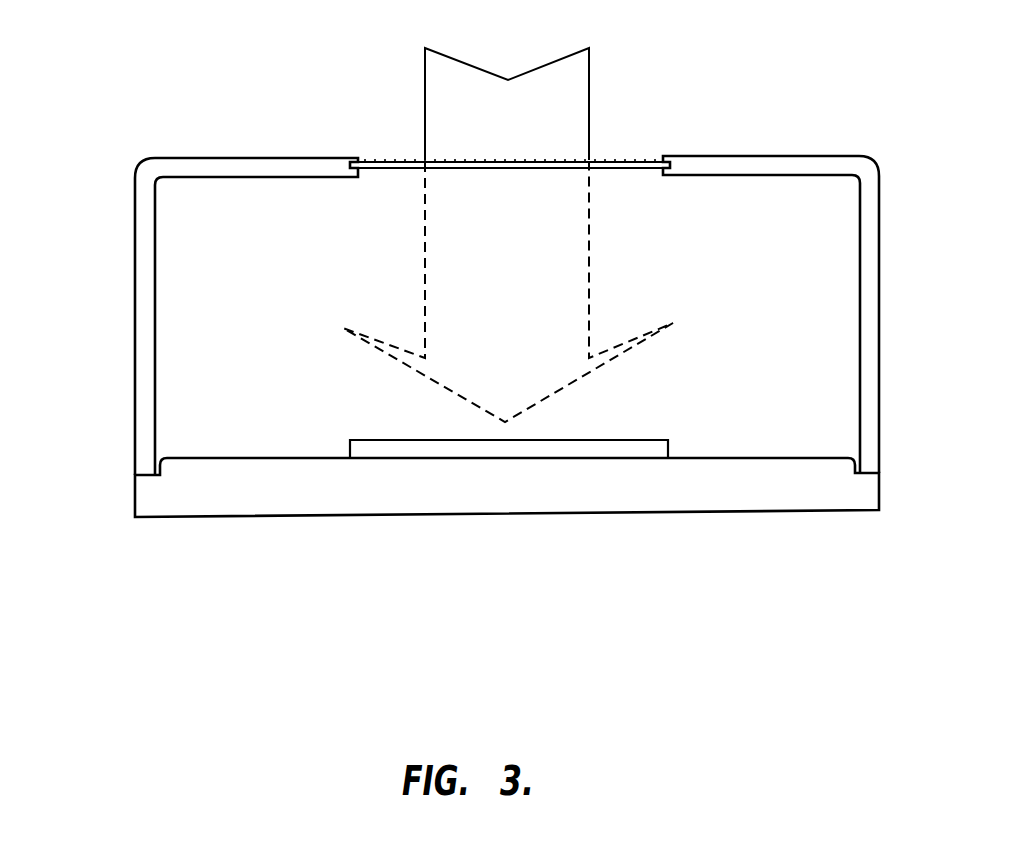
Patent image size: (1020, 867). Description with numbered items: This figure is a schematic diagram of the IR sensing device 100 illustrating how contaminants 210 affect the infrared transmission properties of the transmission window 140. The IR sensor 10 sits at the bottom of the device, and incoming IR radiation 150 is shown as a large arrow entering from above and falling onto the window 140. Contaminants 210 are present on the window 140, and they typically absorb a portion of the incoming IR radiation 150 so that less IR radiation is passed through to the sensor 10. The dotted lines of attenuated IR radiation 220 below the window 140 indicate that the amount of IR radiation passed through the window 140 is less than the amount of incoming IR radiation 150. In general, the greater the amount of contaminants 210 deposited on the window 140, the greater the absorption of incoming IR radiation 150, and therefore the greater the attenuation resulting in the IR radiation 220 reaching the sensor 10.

The IR sensing device 100 is at (122, 105).
The IR sensor 10 is at (472, 453).
The transmission window 140 is at (390, 160).
The incoming IR radiation 150 is at (508, 78).
The contaminants 210 is at (620, 156).
The attenuated IR radiation 220 is at (507, 355).